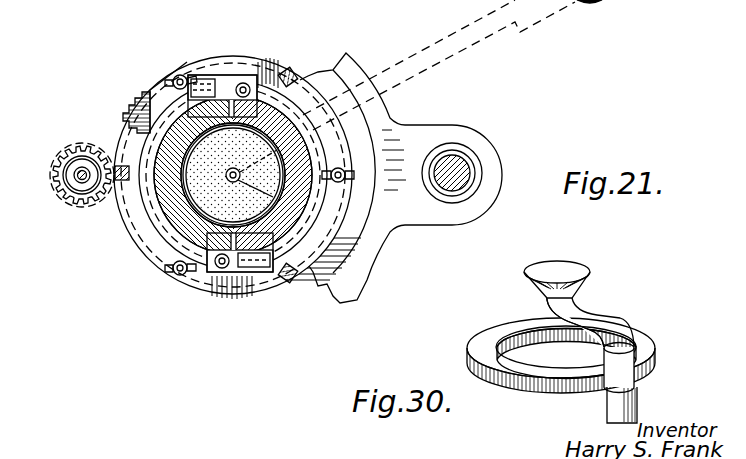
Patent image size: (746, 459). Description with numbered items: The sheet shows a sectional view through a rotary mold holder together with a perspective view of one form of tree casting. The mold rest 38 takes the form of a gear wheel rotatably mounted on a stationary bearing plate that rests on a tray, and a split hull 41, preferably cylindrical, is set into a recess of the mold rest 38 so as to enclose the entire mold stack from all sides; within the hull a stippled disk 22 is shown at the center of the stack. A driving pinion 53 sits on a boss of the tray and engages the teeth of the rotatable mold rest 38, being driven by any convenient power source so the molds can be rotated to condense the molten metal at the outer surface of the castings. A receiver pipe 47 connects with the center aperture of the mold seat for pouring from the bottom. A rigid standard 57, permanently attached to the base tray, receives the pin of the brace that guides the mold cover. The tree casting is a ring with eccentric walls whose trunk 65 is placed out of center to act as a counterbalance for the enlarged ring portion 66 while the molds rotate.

In FIG. 21, the dial disk 22 is at (222, 208).
In FIG. 21, the mold rest 38 is at (140, 103).
In FIG. 21, the split hull 41 is at (183, 217).
In FIG. 21, the receiver pipe 47 is at (596, 3).
In FIG. 21, the driving pinion 53 is at (70, 143).
In FIG. 21, the rigid standard 57 is at (464, 165).
In FIG. 30, the trunk 65 is at (641, 402).
In FIG. 30, the enlarged ring portion 66 is at (488, 338).